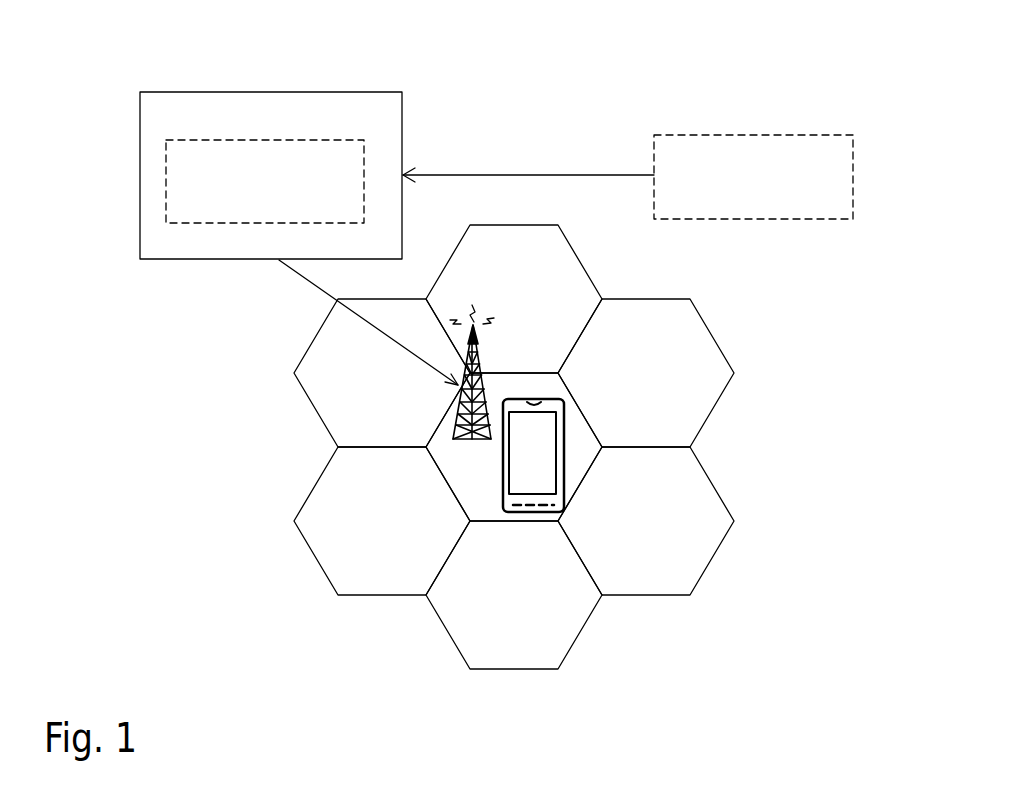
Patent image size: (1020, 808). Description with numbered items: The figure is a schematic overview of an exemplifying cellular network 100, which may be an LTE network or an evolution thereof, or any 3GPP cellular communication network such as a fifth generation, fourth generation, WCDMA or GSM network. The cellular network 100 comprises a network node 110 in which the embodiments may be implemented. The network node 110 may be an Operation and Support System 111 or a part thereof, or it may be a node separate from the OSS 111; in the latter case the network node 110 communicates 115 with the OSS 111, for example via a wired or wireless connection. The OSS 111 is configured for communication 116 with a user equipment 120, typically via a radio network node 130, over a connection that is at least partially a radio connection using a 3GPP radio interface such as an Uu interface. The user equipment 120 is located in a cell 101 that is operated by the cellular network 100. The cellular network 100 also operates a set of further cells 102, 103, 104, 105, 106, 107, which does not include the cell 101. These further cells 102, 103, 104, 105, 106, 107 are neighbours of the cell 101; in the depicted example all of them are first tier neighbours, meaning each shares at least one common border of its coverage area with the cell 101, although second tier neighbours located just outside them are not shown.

The cellular network 100 is at (474, 83).
The cell 101 is at (462, 482).
The cell 102 is at (325, 508).
The cell 103 is at (323, 387).
The cell 104 is at (488, 253).
The cell 105 is at (688, 395).
The cell 106 is at (688, 542).
The cell 107 is at (567, 620).
The network node 110 is at (509, 179).
The Operation and Support System 111 is at (271, 175).
The communication 115 is at (528, 163).
The communication 116 is at (360, 322).
The user equipment 120 is at (533, 455).
The radio network node 130 is at (457, 420).